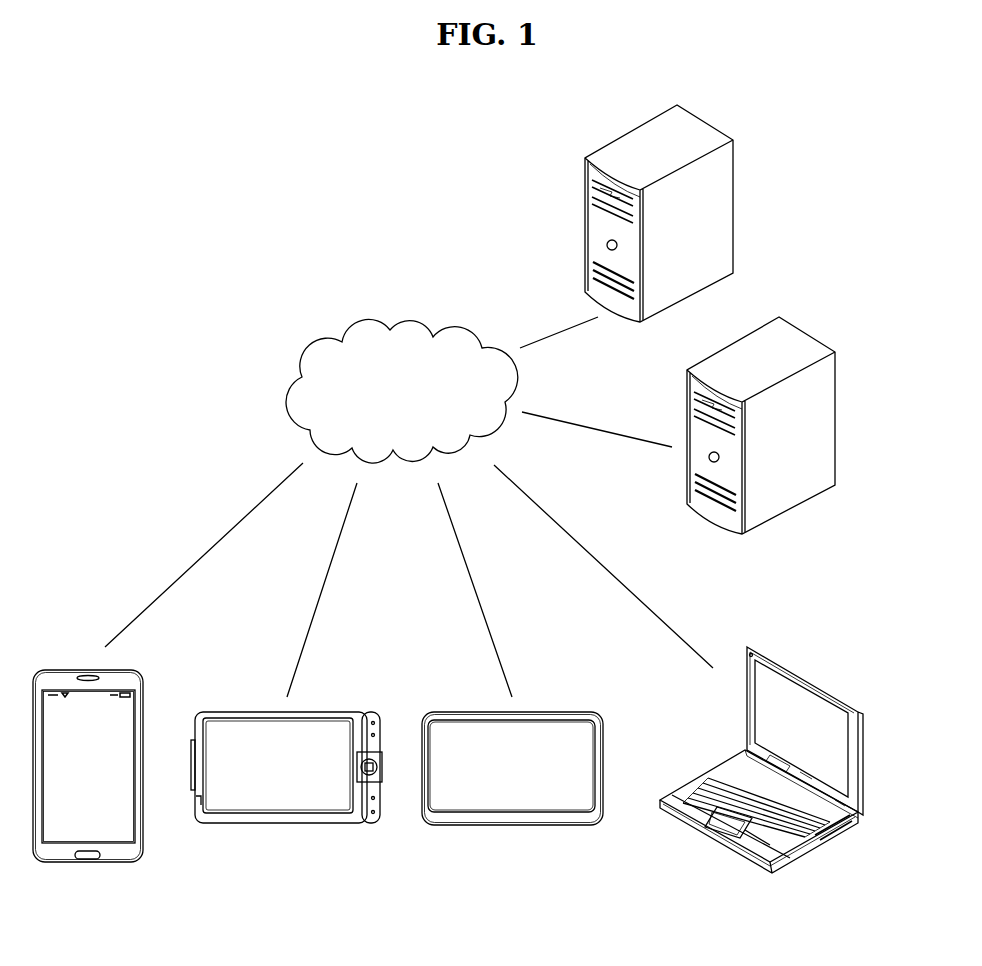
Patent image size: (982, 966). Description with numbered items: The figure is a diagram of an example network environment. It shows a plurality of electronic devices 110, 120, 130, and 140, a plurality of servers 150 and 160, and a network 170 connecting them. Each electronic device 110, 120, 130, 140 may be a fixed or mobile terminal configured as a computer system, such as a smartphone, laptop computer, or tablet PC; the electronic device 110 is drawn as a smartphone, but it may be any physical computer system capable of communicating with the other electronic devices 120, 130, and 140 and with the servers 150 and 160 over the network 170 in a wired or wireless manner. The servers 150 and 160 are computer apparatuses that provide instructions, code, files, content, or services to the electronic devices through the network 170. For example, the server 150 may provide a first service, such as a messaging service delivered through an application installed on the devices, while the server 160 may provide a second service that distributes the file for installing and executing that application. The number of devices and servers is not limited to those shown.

The electronic device 110 is at (88, 865).
The electronic device 120 is at (286, 825).
The electronic device 130 is at (513, 827).
The electronic device 140 is at (861, 762).
The server 150 is at (833, 412).
The server 160 is at (733, 202).
The network 170 is at (405, 318).